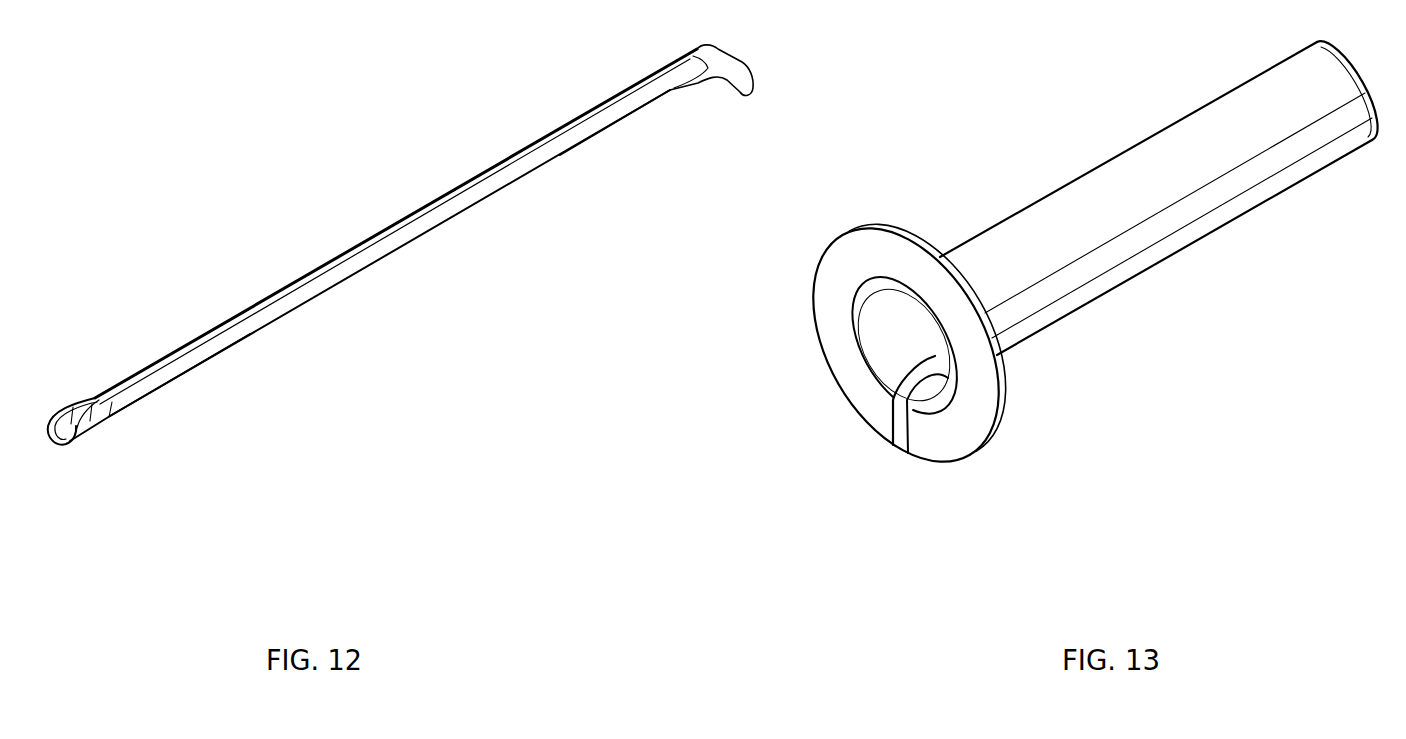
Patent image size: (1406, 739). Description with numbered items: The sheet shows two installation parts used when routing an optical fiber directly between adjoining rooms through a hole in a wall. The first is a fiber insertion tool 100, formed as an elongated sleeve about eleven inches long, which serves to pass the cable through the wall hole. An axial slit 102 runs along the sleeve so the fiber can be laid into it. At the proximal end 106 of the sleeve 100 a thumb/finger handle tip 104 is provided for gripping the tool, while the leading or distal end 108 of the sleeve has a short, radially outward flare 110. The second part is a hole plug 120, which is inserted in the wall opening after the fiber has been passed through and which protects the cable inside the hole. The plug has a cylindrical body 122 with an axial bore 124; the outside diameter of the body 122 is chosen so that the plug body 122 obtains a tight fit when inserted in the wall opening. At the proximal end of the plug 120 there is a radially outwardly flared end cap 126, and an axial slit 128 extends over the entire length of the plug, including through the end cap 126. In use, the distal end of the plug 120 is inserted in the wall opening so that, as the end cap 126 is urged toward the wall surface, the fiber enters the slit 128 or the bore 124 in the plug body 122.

In FIG. 12, the fiber insertion tool 100 is at (447, 218).
In FIG. 12, the axial slit 102 is at (370, 240).
In FIG. 12, the thumb/finger handle tip 104 is at (720, 53).
In FIG. 12, the proximal end 106 is at (585, 138).
In FIG. 12, the distal end 108 is at (192, 368).
In FIG. 12, the radially outward flare 110 is at (82, 441).
In FIG. 13, the hole plug 120 is at (1144, 141).
In FIG. 13, the cylindrical body 122 is at (1062, 212).
In FIG. 13, the axial bore 124 is at (872, 338).
In FIG. 13, the end cap 126 is at (972, 400).
In FIG. 13, the axial slit 128 is at (900, 452).